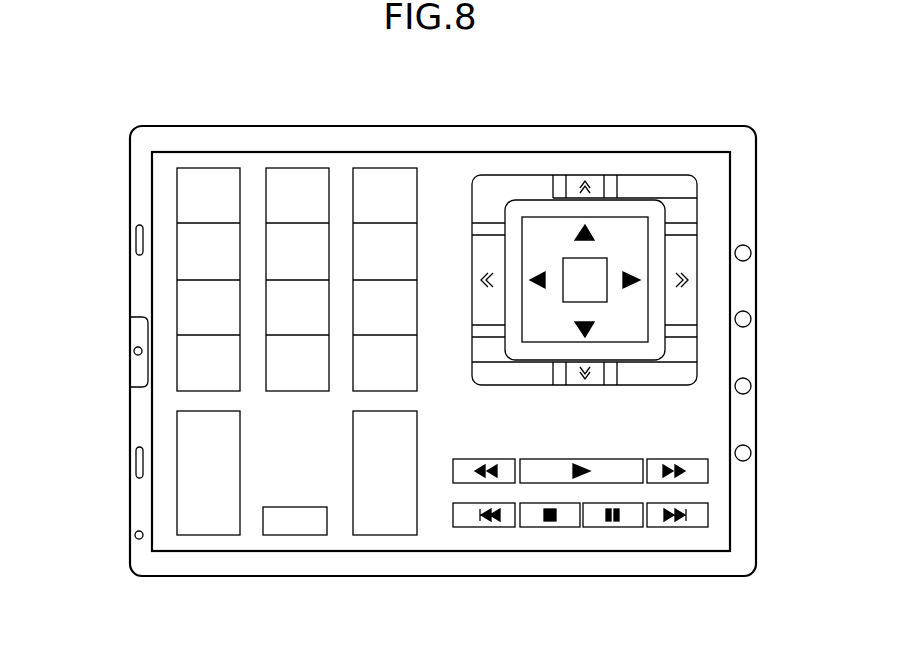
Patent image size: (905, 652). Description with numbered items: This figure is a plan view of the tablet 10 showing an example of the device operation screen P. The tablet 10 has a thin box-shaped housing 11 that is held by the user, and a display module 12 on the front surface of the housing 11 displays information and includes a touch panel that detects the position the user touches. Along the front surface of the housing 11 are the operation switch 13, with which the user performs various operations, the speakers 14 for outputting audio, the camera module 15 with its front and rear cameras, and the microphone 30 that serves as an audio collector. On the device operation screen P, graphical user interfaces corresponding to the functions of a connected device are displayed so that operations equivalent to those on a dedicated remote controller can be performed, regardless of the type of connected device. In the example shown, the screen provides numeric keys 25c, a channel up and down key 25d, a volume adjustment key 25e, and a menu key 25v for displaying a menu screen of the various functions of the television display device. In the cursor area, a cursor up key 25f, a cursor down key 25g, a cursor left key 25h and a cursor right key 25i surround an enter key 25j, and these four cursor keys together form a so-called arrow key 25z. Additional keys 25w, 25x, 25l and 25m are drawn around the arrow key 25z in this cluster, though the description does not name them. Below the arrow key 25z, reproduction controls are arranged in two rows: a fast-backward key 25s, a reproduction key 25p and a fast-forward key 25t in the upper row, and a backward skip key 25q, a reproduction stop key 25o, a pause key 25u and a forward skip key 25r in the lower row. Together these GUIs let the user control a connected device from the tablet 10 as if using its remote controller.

The tablet 10 is at (80, 160).
The housing 11 is at (268, 126).
The display module 12 is at (400, 152).
The operation switch 13 is at (779, 244).
The speakers 14 is at (136, 238).
The camera module 15 is at (130, 336).
The microphone 30 is at (135, 534).
The device operation screen P is at (452, 172).
The numeric keys 25c is at (253, 180).
The channel up and down key 25d is at (208, 535).
The volume adjustment key 25e is at (383, 535).
The menu key 25v is at (295, 535).
The recording list key 25w is at (515, 175).
The program list key 25x is at (653, 175).
The cursor up key 25f is at (590, 232).
The cursor down key 25g is at (580, 327).
The cursor left key 25h is at (542, 278).
The cursor right key 25i is at (633, 270).
The enter key 25j is at (563, 296).
The return key 25l is at (472, 362).
The finish key 25m is at (652, 385).
The arrow key 25z is at (650, 217).
The fast-backward key 25s is at (482, 459).
The reproduction key 25p is at (580, 459).
The fast-forward key 25t is at (708, 471).
The backward skip key 25q is at (483, 527).
The reproduction stop key 25o is at (547, 527).
The pause key 25u is at (612, 527).
The forward skip key 25r is at (675, 527).